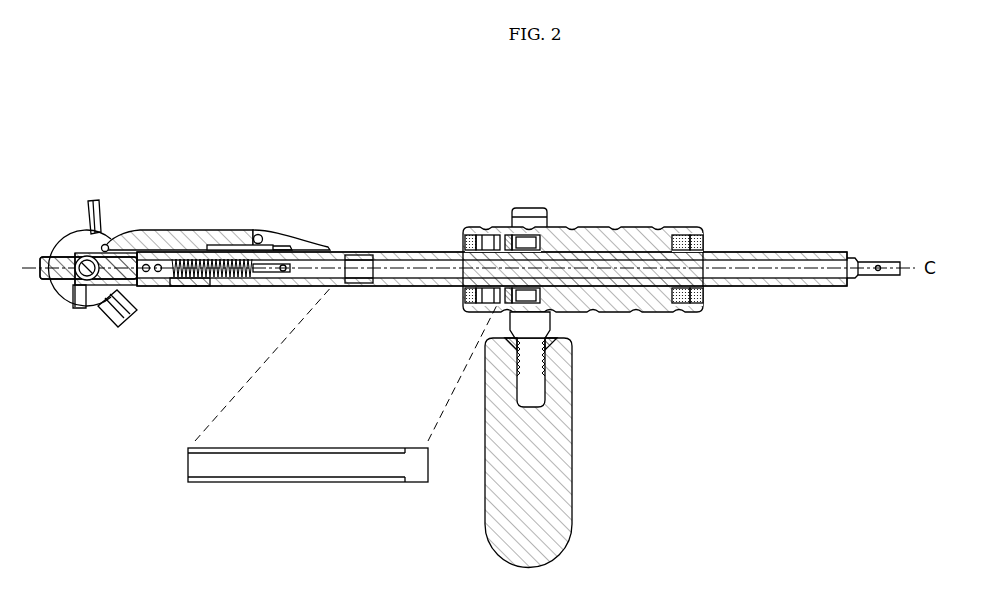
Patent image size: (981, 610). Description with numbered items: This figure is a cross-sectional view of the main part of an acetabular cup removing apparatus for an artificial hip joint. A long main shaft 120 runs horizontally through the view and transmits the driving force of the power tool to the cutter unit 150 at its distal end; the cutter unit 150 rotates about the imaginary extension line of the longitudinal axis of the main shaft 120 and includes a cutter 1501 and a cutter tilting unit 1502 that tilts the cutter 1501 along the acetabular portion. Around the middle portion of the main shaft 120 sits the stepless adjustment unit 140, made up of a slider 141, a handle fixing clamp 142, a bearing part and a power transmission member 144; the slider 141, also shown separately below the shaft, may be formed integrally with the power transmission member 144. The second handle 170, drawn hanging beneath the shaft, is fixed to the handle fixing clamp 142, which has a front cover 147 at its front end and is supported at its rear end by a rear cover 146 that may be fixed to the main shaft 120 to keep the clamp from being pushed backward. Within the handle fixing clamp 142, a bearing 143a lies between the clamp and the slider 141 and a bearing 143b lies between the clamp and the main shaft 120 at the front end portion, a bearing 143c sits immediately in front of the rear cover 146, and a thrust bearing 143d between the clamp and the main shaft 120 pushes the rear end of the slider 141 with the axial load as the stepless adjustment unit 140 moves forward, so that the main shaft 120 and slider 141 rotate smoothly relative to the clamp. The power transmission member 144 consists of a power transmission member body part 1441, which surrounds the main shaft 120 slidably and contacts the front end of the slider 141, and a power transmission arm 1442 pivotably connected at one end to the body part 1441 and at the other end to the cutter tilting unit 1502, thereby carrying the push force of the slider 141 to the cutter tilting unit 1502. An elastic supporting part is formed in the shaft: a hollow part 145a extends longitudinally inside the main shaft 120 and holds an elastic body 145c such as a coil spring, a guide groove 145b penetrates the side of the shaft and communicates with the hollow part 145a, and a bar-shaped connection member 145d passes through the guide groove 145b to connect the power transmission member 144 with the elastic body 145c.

The main shaft 120 is at (722, 288).
The stepless adjustment unit 140 is at (471, 213).
The slider 141 is at (318, 482).
The handle fixing clamp 142 is at (622, 235).
The bearing 143a is at (488, 236).
The bearing 143b is at (532, 236).
The bearing 143c is at (682, 240).
The thrust bearing 143d is at (508, 232).
The power transmission member 144 is at (223, 177).
The power transmission member body part 1441 is at (292, 242).
The power transmission arm 1442 is at (183, 235).
The hollow part 145a is at (349, 272).
The guide groove 145b is at (270, 283).
The elastic body 145c is at (186, 286).
The connection member 145d is at (272, 250).
The rear cover 146 is at (706, 245).
The front cover 147 is at (466, 240).
The cutter unit 150 is at (77, 259).
The cutter 1501 is at (96, 205).
The cutter tilting unit 1502 is at (80, 306).
The second handle 170 is at (563, 442).